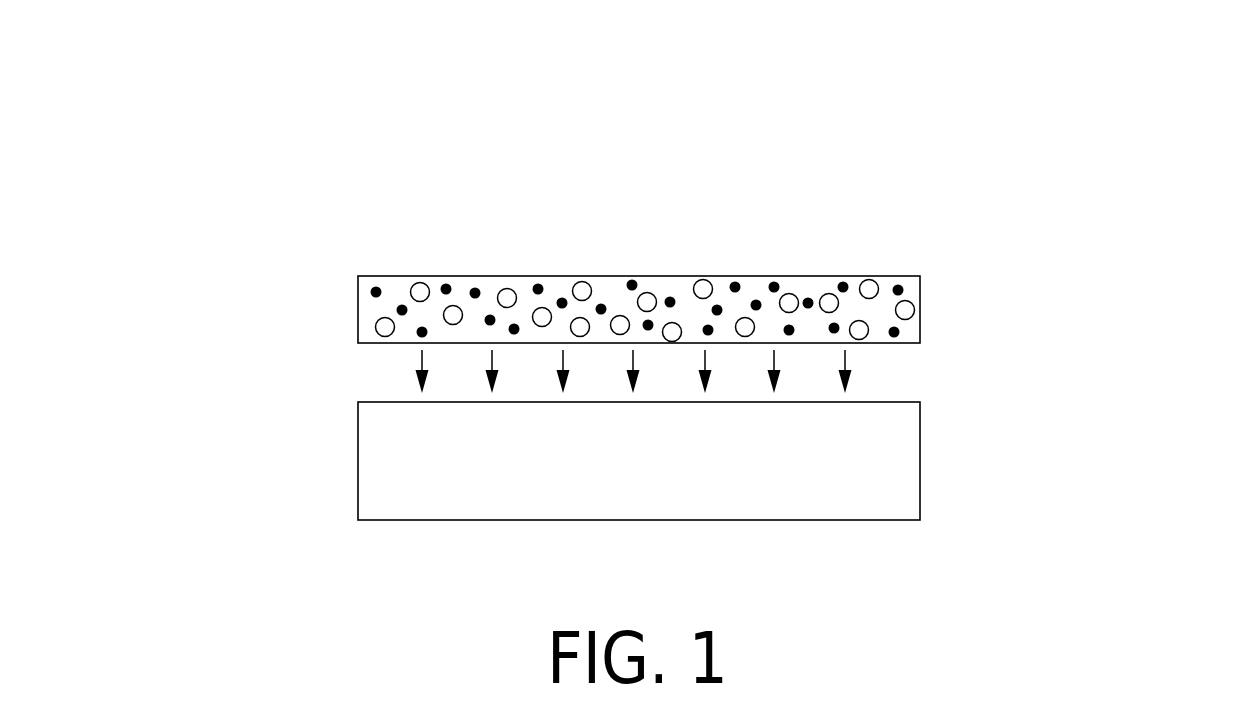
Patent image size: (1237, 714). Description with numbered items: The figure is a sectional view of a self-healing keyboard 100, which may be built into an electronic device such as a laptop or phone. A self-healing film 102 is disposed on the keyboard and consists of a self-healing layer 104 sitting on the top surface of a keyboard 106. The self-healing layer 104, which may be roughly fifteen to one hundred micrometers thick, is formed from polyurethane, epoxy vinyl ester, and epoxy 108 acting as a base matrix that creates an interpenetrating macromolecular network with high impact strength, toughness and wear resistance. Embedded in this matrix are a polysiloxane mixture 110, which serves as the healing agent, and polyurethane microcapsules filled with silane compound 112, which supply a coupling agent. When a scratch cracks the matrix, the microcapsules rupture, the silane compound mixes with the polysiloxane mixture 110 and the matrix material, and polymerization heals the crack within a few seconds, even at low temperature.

The self-healing keyboard 100 is at (598, 75).
The self-healing film 102 is at (352, 227).
The self-healing layer 104 is at (358, 293).
The keyboard 106 is at (715, 471).
The polyurethane, epoxy vinyl ester, and epoxy 108 is at (807, 290).
The polysiloxane mixture 110 is at (500, 287).
The polyurethane microcapsules filled with silane compound 112 is at (905, 289).